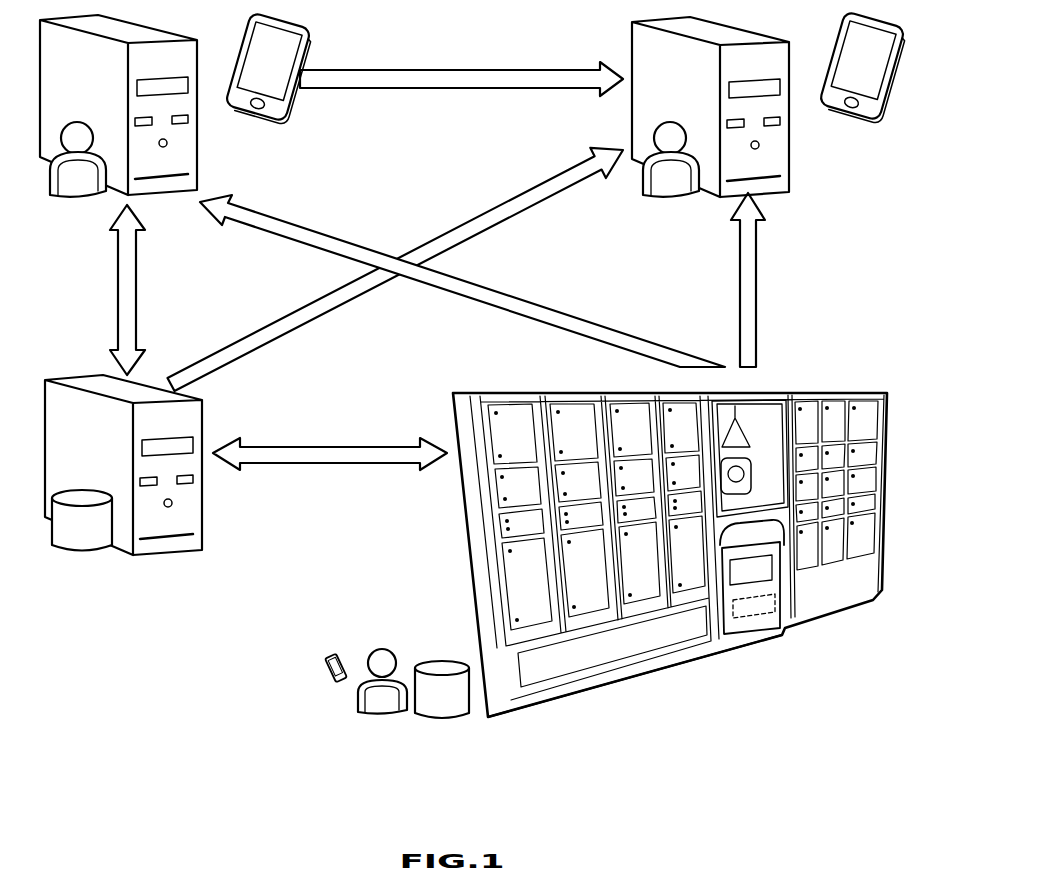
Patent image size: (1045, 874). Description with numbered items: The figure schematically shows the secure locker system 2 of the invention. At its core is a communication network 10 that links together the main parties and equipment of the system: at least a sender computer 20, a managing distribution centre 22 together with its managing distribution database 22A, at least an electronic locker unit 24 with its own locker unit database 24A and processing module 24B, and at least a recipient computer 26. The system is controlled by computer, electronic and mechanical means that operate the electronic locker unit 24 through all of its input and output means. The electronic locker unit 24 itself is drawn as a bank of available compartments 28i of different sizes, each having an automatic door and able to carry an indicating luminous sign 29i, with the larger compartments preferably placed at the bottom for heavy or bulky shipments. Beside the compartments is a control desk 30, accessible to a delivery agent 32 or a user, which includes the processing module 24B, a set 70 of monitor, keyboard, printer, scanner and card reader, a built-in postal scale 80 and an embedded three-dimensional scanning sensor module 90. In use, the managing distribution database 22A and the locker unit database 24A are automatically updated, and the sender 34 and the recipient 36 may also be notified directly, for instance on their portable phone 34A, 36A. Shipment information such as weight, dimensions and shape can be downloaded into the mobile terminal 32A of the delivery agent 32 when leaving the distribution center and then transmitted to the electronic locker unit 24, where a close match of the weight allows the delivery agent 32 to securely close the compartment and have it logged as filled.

The secure locker system 2 is at (448, 56).
The communication network 10 is at (382, 348).
The sender computer 20 is at (205, 130).
The managing distribution centre 22 is at (85, 378).
The managing distribution database 22A is at (92, 520).
The electronic locker unit 24 is at (693, 519).
The locker unit database 24A is at (443, 667).
The processing module 24B is at (745, 642).
The recipient computer 26 is at (808, 165).
The compartment 28i is at (801, 557).
The indicating luminous sign 29i is at (860, 508).
The control desk 30 is at (757, 587).
The delivery agent 32 is at (382, 660).
The mobile terminal 32A is at (342, 656).
The sender 34 is at (78, 137).
The portable phone 34A is at (265, 80).
The recipient 36 is at (671, 136).
The portable phone 36A is at (867, 62).
The set of monitor, keyboard, printer, scanner and card reader 70 is at (720, 560).
The built-in postal scale 80 is at (772, 615).
The embedded 3D scanning sensor module 90 is at (740, 425).